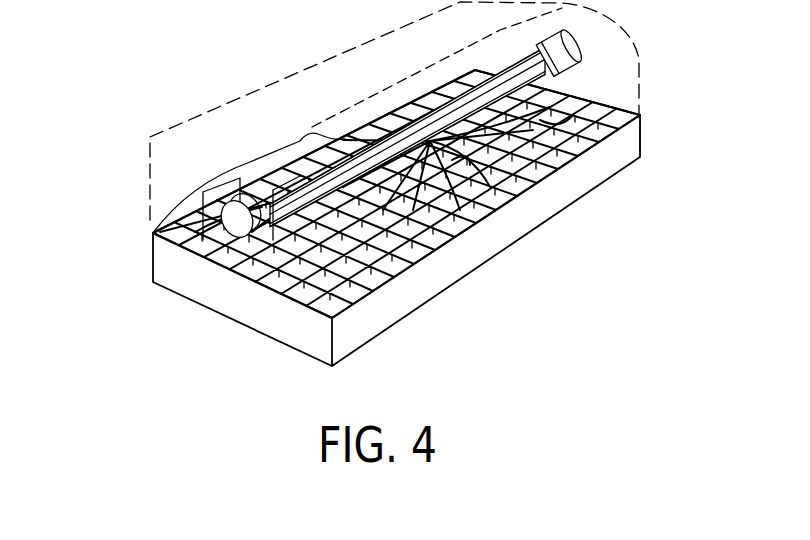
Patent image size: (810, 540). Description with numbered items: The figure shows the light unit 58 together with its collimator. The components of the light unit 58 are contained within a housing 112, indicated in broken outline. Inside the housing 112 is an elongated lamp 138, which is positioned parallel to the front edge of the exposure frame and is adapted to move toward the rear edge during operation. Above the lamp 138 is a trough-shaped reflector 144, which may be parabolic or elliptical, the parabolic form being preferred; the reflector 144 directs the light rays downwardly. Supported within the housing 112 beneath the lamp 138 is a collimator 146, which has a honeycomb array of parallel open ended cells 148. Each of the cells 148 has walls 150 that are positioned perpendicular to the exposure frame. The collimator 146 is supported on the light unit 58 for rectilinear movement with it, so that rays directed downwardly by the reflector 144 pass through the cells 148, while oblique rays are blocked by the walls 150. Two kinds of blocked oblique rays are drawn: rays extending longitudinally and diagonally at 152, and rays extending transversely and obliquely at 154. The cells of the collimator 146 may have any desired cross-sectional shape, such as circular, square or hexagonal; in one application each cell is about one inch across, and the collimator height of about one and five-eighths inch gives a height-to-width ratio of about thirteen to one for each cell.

The light unit 58 is at (213, 108).
The housing 112 is at (146, 180).
The elongated lamp 138 is at (503, 64).
The reflector 144 is at (172, 212).
The collimator 146 is at (554, 194).
The open ended cells 148 is at (420, 240).
The cell walls 150 is at (245, 255).
The longitudinal and diagonal oblique rays 152 is at (315, 240).
The transverse and oblique rays 154 is at (470, 165).